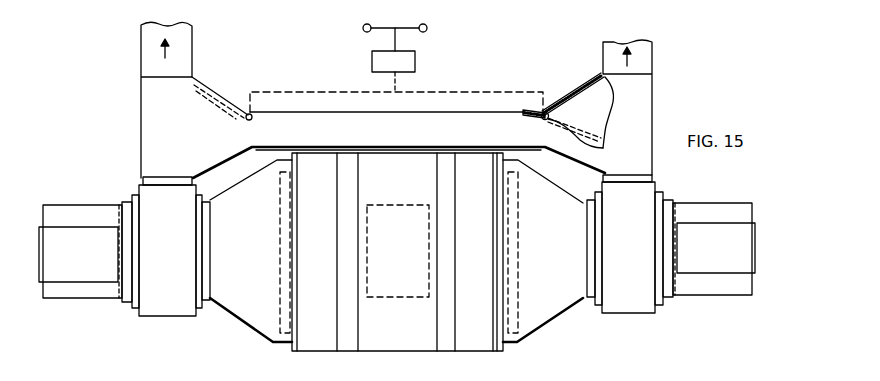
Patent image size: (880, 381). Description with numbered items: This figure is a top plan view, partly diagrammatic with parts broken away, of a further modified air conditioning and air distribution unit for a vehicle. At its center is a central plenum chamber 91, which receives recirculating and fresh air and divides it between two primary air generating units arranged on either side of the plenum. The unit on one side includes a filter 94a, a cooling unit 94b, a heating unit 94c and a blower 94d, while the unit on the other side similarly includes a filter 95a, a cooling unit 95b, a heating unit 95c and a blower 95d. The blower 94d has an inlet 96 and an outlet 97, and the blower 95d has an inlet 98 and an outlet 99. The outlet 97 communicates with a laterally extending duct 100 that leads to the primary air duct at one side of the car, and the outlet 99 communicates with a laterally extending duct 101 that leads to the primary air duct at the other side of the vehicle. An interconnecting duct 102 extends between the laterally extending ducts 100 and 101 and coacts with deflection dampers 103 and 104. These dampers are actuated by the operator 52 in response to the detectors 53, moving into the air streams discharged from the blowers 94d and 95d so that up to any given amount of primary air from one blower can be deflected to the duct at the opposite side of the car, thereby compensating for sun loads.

The operator 52 is at (420, 63).
The detectors 53 is at (363, 28).
The central plenum chamber 91 is at (266, 350).
The filter 94a is at (348, 343).
The cooling unit 94b is at (310, 345).
The heating unit 94c is at (280, 258).
The blower 94d is at (155, 317).
The filter 95a is at (447, 353).
The cooling unit 95b is at (482, 343).
The heating unit 95c is at (520, 322).
The blower 95d is at (642, 310).
The inlet 96 is at (205, 233).
The outlet 97 is at (157, 175).
The inlet 98 is at (592, 240).
The outlet 99 is at (636, 178).
The laterally extending duct 100 is at (152, 58).
The laterally extending duct 101 is at (652, 53).
The interconnecting duct 102 is at (488, 111).
The deflection damper 103 is at (224, 92).
The deflection damper 104 is at (598, 94).